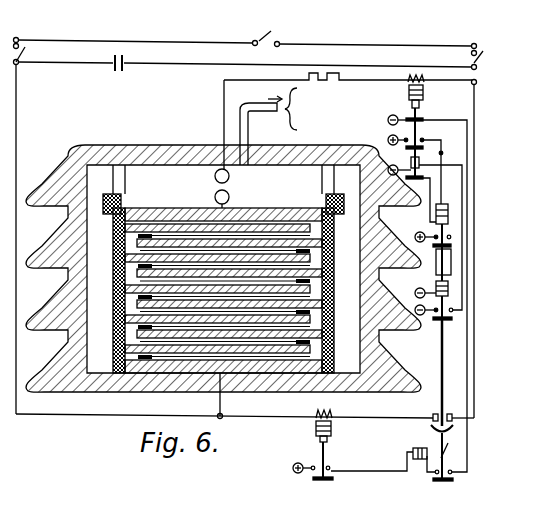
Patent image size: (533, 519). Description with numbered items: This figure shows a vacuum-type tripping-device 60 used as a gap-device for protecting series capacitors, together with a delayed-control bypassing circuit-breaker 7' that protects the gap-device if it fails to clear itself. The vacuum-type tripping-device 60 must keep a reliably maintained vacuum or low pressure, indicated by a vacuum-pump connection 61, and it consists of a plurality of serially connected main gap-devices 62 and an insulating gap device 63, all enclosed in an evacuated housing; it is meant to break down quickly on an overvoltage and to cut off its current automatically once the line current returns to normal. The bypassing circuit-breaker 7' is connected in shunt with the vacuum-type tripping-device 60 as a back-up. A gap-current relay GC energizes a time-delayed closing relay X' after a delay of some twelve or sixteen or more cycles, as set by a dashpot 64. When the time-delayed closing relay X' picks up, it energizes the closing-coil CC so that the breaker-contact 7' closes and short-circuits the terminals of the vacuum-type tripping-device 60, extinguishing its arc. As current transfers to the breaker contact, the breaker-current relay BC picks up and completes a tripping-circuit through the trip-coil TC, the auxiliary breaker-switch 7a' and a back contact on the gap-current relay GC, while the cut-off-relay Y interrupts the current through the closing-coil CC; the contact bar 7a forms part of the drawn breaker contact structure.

The vacuum-type tripping-device 60 is at (131, 147).
The vacuum-pump connection 61 is at (268, 91).
The main gap-devices 62 is at (192, 230).
The insulating gap device 63 is at (230, 181).
The dashpot 64 is at (436, 262).
The gap-current relay GC is at (401, 126).
The closing-coil CC is at (437, 284).
The breaker-current relay BC is at (316, 437).
The trip-coil TC is at (383, 460).
The time-delayed closing relay X' is at (446, 207).
The cut-off-relay Y is at (410, 161).
The bypassing circuit-breaker 7' is at (429, 376).
The contact bar 7a is at (439, 319).
The auxiliary breaker-switch 7a' is at (453, 467).